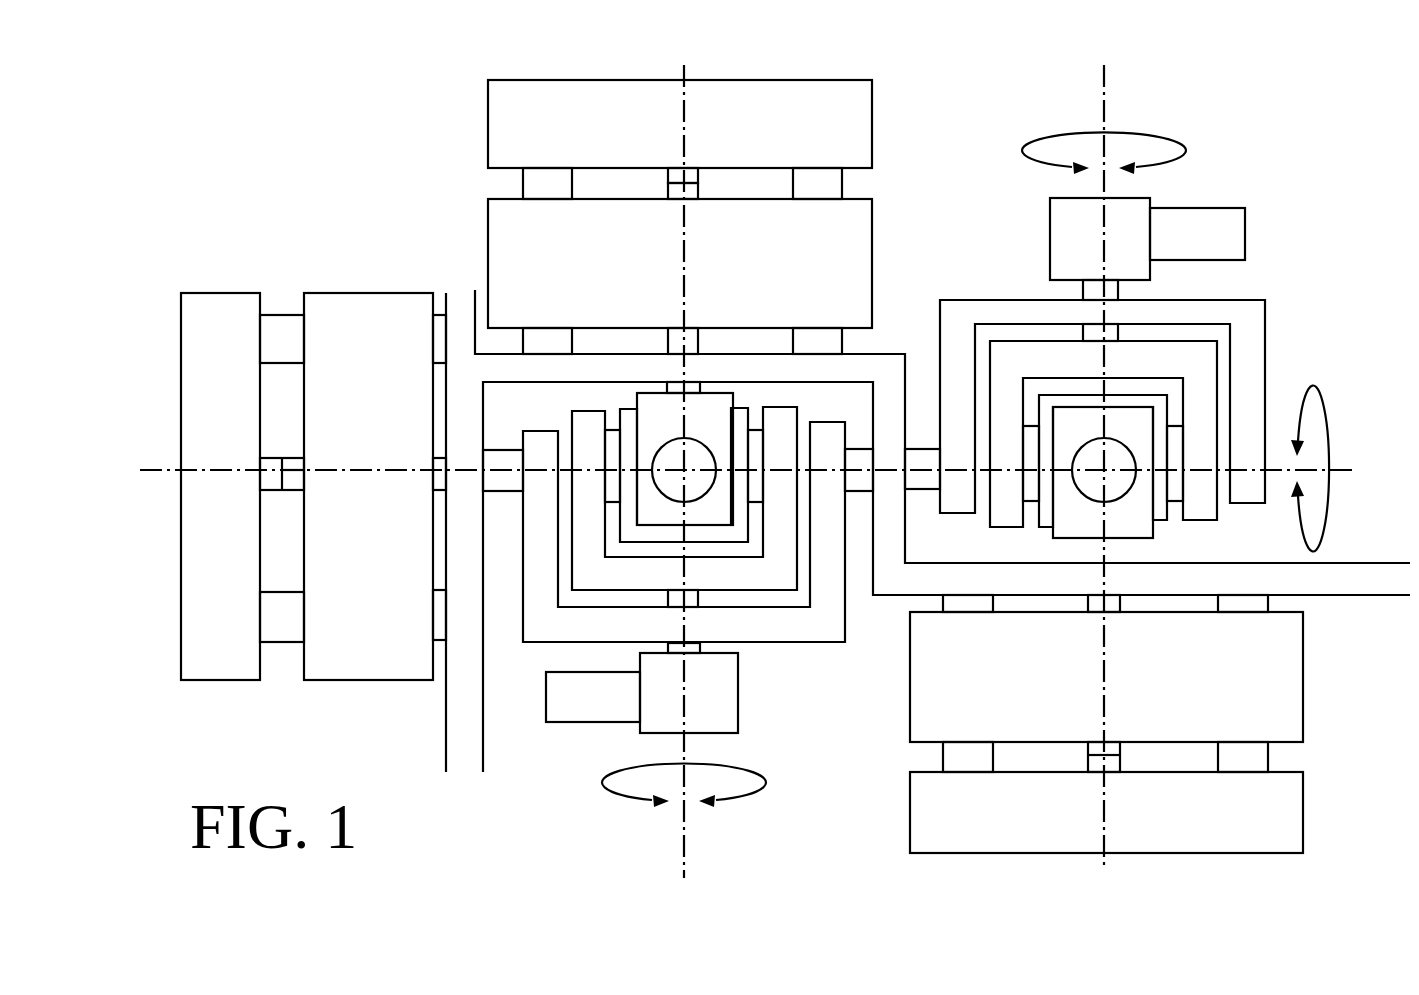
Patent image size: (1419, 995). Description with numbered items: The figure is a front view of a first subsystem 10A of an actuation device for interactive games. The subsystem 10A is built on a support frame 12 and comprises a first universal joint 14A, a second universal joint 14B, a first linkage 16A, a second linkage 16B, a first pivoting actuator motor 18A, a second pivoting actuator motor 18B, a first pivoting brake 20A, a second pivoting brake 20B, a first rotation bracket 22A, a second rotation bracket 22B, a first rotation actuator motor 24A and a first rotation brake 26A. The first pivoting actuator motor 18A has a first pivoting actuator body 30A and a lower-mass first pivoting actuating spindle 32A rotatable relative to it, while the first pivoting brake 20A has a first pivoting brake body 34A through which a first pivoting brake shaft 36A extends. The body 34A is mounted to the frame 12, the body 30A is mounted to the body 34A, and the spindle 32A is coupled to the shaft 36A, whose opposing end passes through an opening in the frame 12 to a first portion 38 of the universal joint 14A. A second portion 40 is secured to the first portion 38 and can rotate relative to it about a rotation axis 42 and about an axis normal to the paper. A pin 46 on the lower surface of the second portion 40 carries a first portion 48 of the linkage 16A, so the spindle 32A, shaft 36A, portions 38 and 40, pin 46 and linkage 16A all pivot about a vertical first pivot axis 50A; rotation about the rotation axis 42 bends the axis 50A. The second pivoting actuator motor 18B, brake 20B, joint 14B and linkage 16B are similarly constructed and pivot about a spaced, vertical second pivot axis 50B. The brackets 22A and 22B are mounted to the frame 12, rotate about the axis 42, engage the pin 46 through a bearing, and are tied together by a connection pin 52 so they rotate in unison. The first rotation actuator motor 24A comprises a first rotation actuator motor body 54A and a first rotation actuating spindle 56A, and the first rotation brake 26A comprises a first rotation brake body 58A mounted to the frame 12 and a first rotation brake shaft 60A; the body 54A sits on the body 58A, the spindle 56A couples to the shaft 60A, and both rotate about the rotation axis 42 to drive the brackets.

The first subsystem 10A is at (251, 136).
The support frame 12 is at (447, 758).
The first universal joint 14A is at (774, 595).
The second universal joint 14B is at (1202, 313).
The first linkage 16A is at (556, 722).
The second linkage 16B is at (1245, 213).
The first pivoting actuator motor 18A is at (886, 124).
The second pivoting actuator motor 18B is at (1316, 818).
The first pivoting brake 20A is at (884, 274).
The second pivoting brake 20B is at (1316, 670).
The first rotation bracket 22A is at (528, 636).
The second rotation bracket 22B is at (940, 312).
The first rotation actuator motor 24A is at (246, 288).
The first rotation brake 26A is at (407, 288).
The first pivoting actuator body 30A is at (862, 128).
The first pivoting actuating spindle 32A is at (698, 178).
The first pivoting brake body 34A is at (862, 277).
The first pivoting brake shaft 36A is at (668, 187).
The first portion of universal joint 38 is at (724, 398).
The second portion of universal joint 40 is at (788, 402).
The rotation axis 42 is at (1353, 469).
The pin 46 is at (706, 648).
The first portion of first linkage 48 is at (628, 722).
The first pivot axis 50A is at (684, 68).
The second pivot axis 50B is at (1103, 868).
The connection pin 52 is at (910, 452).
The first rotation actuator motor body 54A is at (196, 296).
The first rotation actuating spindle 56A is at (288, 446).
The first rotation brake body 58A is at (312, 296).
The first rotation brake shaft 60A is at (293, 492).